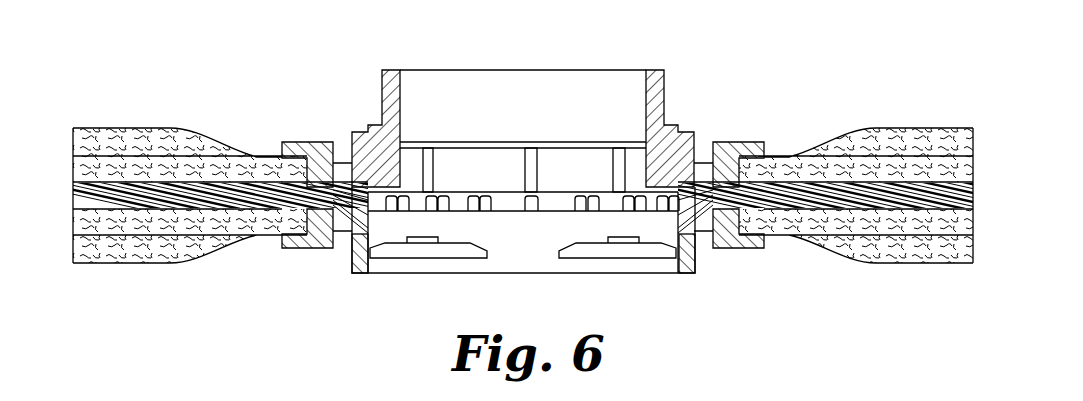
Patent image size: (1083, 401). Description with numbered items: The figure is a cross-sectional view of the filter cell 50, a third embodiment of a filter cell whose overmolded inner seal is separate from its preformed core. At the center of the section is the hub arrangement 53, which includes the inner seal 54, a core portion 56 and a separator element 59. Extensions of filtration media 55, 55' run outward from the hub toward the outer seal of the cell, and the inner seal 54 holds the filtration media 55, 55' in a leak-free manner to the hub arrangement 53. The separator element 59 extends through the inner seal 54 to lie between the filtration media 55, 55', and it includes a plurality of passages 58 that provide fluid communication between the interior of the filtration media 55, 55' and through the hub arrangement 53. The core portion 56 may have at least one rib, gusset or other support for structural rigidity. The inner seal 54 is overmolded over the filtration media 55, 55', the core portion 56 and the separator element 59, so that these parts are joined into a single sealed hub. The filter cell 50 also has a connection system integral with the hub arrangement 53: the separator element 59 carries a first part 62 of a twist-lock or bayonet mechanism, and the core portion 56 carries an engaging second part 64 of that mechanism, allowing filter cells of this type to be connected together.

The filter cell 50 is at (782, 58).
The hub arrangement 53 is at (357, 279).
The inner seal 54 is at (728, 242).
The filtration media 55 is at (523, 166).
The filtration media 55' is at (523, 270).
The core portion 56 is at (390, 87).
The passages 58 is at (508, 205).
The separator element 59 is at (185, 198).
The first part of twist-lock or bayonet mechanism 62 is at (627, 255).
The second part of twist-lock or bayonet mechanism 64 is at (667, 103).